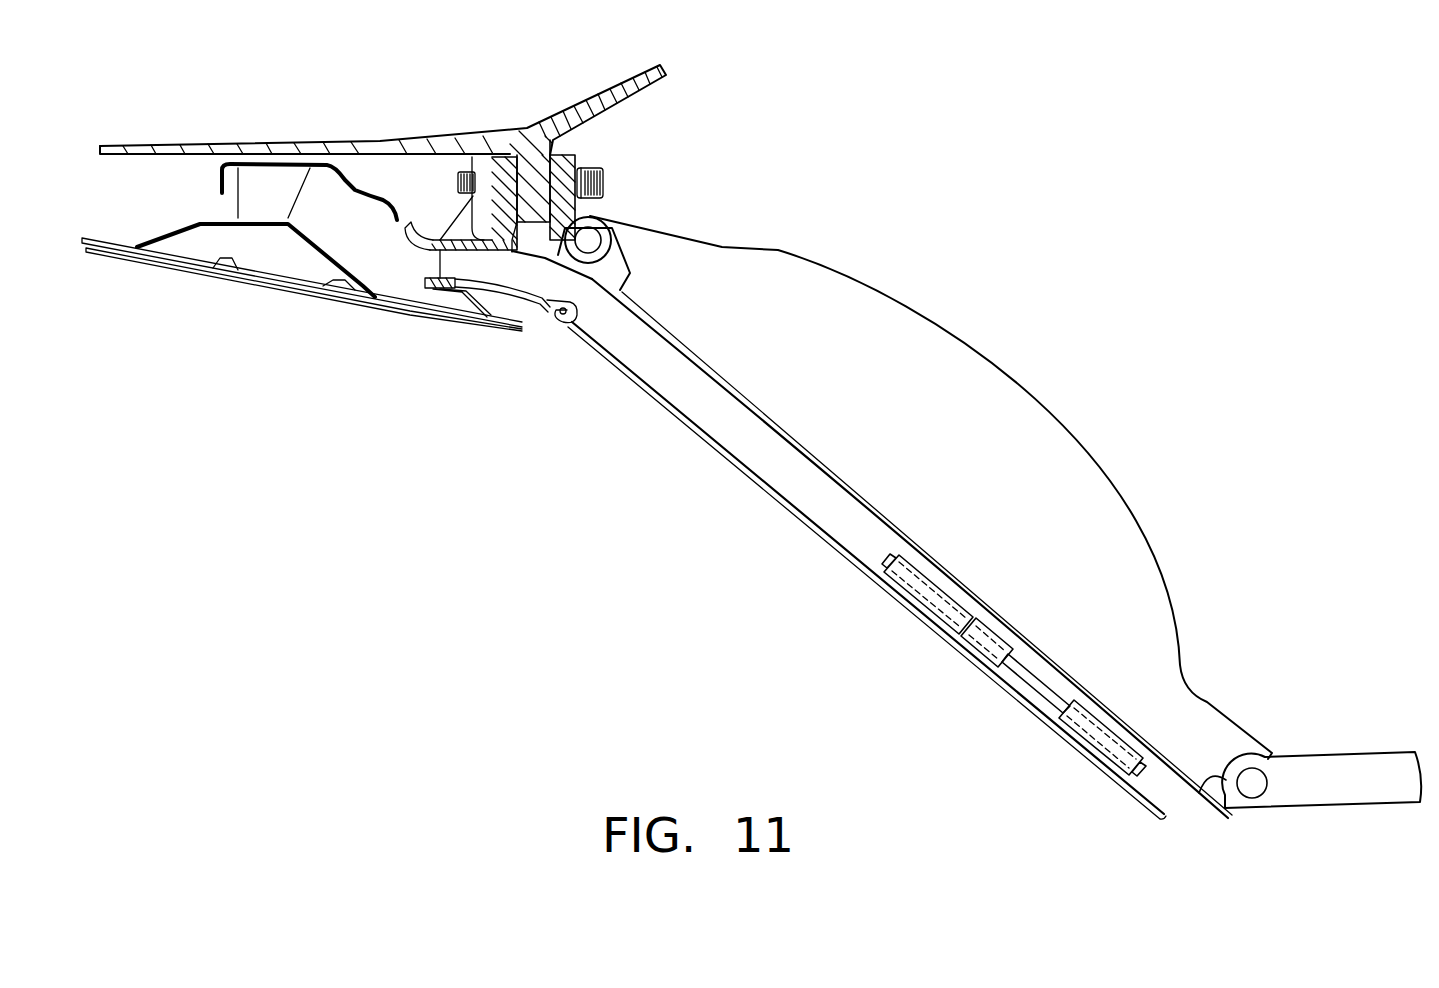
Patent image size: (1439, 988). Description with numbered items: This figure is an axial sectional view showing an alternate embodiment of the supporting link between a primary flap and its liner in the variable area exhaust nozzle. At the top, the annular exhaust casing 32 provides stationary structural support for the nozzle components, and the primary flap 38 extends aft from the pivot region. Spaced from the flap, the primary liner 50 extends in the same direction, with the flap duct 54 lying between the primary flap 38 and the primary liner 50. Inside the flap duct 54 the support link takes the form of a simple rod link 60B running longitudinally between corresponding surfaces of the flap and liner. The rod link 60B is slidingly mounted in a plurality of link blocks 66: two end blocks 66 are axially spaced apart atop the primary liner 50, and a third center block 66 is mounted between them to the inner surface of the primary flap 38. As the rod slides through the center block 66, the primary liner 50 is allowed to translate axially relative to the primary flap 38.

The exhaust casing 32 is at (592, 98).
The primary flap 38 is at (952, 317).
The primary liner 50 is at (768, 493).
The flap duct 54 is at (707, 402).
The rod link 60B is at (1025, 665).
The link block 66 is at (927, 578).